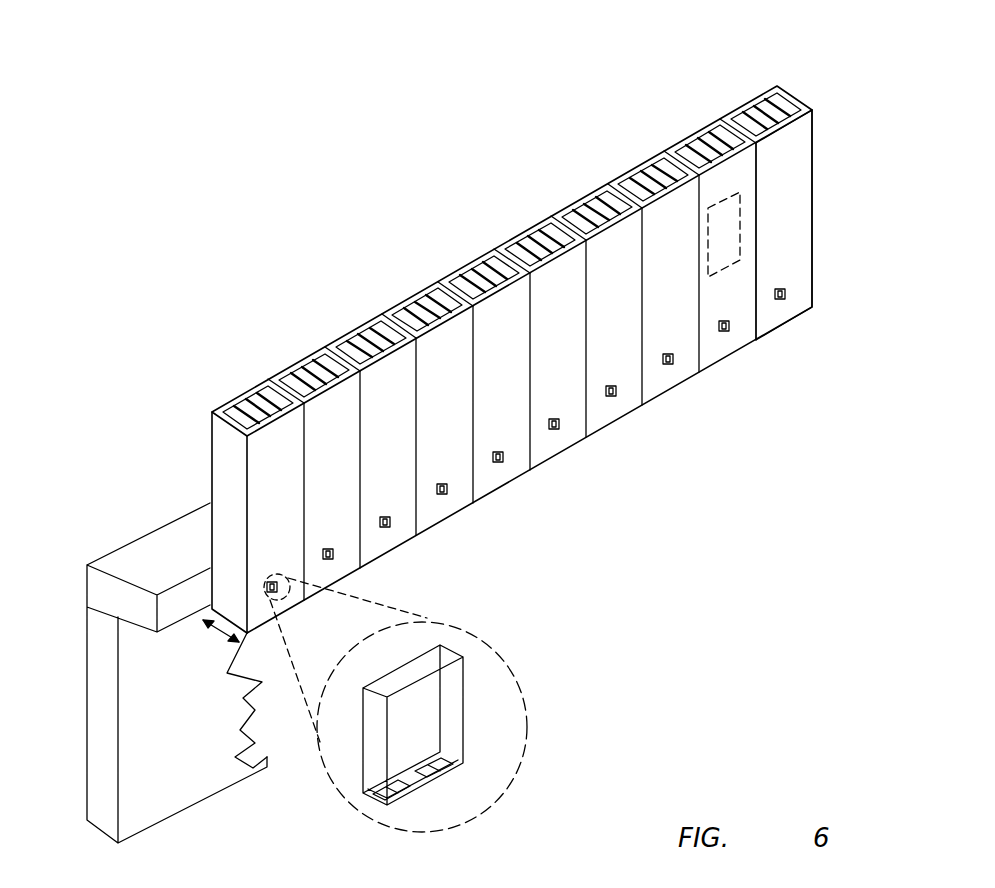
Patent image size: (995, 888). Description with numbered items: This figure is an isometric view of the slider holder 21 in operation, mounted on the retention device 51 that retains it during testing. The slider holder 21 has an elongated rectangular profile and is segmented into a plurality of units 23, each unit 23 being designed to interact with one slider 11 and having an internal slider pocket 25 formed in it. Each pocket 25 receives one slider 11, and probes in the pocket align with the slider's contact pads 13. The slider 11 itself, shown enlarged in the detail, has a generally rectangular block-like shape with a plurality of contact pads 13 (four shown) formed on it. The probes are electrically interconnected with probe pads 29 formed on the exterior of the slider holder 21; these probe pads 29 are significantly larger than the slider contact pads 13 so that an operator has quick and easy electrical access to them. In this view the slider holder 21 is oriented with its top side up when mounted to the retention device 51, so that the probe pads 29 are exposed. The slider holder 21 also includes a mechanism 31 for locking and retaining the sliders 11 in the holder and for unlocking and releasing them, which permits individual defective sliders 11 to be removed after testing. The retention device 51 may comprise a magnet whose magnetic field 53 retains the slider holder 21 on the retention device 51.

The slider holder 21 is at (805, 61).
The unit 23 is at (797, 187).
The mechanism 31 is at (727, 240).
The probe pads 29 is at (211, 412).
The slider pocket 25 is at (337, 560).
The retention device 51 is at (152, 552).
The magnetic field 53 is at (217, 630).
The slider 11 is at (447, 677).
The contact pads 13 is at (437, 777).